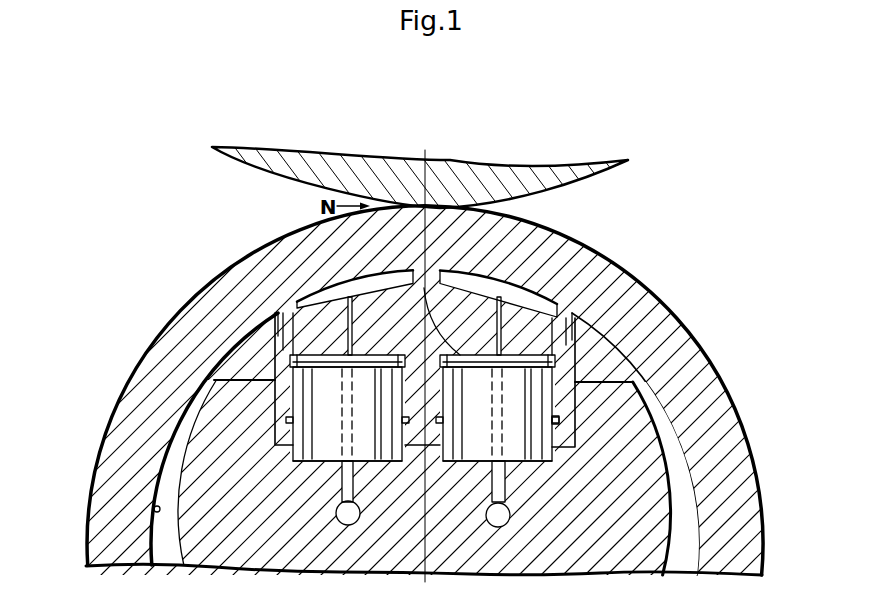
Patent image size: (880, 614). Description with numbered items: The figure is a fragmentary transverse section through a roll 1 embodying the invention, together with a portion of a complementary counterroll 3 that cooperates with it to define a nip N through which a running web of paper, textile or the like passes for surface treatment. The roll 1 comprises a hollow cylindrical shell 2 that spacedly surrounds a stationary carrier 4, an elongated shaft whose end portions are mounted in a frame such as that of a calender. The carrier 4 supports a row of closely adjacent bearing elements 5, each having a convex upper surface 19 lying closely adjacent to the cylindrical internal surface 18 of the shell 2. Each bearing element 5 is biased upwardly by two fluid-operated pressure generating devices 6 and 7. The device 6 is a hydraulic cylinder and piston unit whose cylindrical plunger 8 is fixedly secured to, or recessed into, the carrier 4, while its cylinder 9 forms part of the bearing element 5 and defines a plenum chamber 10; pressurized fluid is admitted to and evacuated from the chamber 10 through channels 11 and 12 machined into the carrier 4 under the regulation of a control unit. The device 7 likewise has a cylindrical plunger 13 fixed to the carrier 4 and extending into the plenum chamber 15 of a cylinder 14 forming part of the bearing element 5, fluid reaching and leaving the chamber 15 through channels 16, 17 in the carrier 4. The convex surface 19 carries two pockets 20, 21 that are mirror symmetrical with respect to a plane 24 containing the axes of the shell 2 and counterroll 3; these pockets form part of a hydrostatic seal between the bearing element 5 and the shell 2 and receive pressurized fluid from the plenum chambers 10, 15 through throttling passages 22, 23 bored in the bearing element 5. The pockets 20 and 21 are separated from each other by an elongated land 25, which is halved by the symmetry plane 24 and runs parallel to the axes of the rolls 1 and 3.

The roll 1 is at (155, 304).
The hollow cylindrical shell 2 is at (126, 399).
The counterroll 3 is at (288, 153).
The stationary carrier 4 is at (640, 410).
The bearing element 5 is at (575, 355).
The pressure generating device 6 is at (309, 447).
The pressure generating device 7 is at (546, 449).
The cylindrical plunger 8 is at (307, 400).
The cylinder 9 is at (277, 358).
The plenum chamber 10 is at (287, 347).
The channel 11 is at (343, 481).
The channel 12 is at (347, 520).
The cylindrical plunger 13 is at (555, 408).
The cylinder 14 is at (592, 357).
The plenum chamber 15 is at (575, 337).
The channel 16 is at (502, 483).
The channel 17 is at (498, 520).
The cylindrical internal surface 18 is at (155, 507).
The convex upper surface 19 is at (277, 333).
The pocket 20 is at (328, 293).
The pocket 21 is at (510, 290).
The throttling passage 22 is at (313, 292).
The throttling passage 23 is at (575, 317).
The symmetry plane 24 is at (428, 278).
The land 25 is at (497, 408).